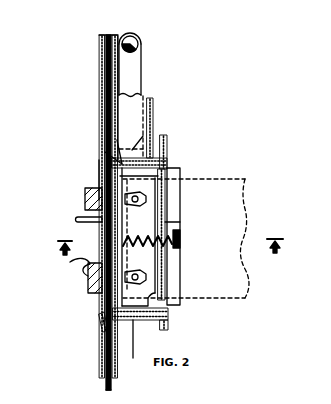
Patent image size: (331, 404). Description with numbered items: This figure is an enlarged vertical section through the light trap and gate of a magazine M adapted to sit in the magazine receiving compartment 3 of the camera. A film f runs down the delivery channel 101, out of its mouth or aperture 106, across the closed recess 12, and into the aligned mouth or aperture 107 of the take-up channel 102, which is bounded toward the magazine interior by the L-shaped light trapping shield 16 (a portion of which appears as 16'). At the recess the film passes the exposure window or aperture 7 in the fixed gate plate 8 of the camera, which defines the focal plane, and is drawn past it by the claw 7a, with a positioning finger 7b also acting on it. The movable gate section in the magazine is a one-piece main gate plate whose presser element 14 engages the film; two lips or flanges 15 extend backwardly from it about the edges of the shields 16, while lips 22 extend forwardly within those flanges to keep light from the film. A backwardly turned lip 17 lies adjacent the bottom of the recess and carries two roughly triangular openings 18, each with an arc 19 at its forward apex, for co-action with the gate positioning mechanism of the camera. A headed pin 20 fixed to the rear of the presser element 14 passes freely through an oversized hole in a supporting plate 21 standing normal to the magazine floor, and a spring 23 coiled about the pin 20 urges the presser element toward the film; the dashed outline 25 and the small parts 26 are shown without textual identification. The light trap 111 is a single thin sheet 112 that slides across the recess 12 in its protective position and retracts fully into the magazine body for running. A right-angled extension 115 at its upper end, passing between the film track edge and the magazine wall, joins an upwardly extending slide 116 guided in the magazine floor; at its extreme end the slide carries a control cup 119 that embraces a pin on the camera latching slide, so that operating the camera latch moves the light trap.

The film f is at (108, 70).
The magazine M is at (162, 91).
The delivery channel 101 is at (108, 35).
The take-up channel 102 is at (120, 380).
The mouth or aperture 106 is at (102, 170).
The mouth or aperture 107 is at (100, 314).
The light-trap 111 is at (95, 182).
The single thin sheet 112 is at (98, 172).
The right-angled extension 115 is at (100, 108).
The upwardly extending slide 116 is at (131, 65).
The control cup 119 is at (138, 44).
The closed recess 12 is at (181, 221).
The presser element 14 is at (108, 238).
The lips or flanges 15 is at (158, 156).
The light trapping shield 16 is at (136, 347).
The bracket web portion 16' is at (164, 126).
The backwardly turned lip 17 is at (140, 262).
The irregularly shaped openings 18 is at (143, 197).
The arc 19 is at (166, 171).
The headed pin 20 is at (180, 240).
The supporting plate 21 is at (166, 222).
The lips 22 is at (167, 167).
The spring 23 is at (142, 237).
The cover 25 is at (232, 192).
The ball 26 is at (146, 202).
The magazine receiving compartment 3 is at (170, 253).
The exposure window or aperture 7 is at (80, 219).
The claw 7a is at (92, 248).
The positioning member or finger 7b is at (82, 199).
The fixed gate plate 8 is at (90, 280).